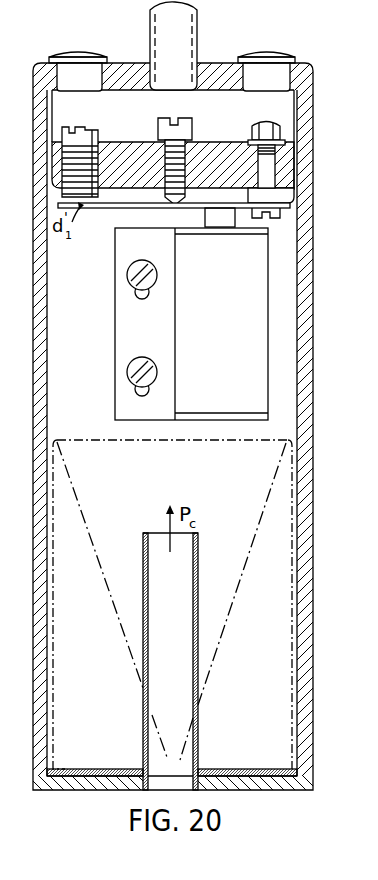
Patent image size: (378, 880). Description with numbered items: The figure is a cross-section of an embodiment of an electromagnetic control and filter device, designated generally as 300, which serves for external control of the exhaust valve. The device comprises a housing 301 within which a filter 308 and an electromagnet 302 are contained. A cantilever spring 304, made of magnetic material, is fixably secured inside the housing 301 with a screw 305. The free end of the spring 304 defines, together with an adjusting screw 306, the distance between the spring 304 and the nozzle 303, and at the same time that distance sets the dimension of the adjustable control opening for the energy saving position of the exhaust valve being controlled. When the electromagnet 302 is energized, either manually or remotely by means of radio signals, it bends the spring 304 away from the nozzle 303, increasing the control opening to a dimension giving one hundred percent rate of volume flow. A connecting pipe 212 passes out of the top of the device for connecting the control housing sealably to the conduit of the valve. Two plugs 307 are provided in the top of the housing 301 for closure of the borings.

The connecting pipe 212 is at (187, 50).
The electromagnetic control and filter device 300 is at (304, 523).
The housing 301 is at (312, 641).
The electromagnet 302 is at (258, 354).
The nozzle 303 is at (108, 118).
The cantilever spring 304 is at (110, 205).
The screw 305 is at (277, 212).
The adjusting screw 306 is at (191, 128).
The plugs 307 is at (92, 60).
The filter 308 is at (290, 582).